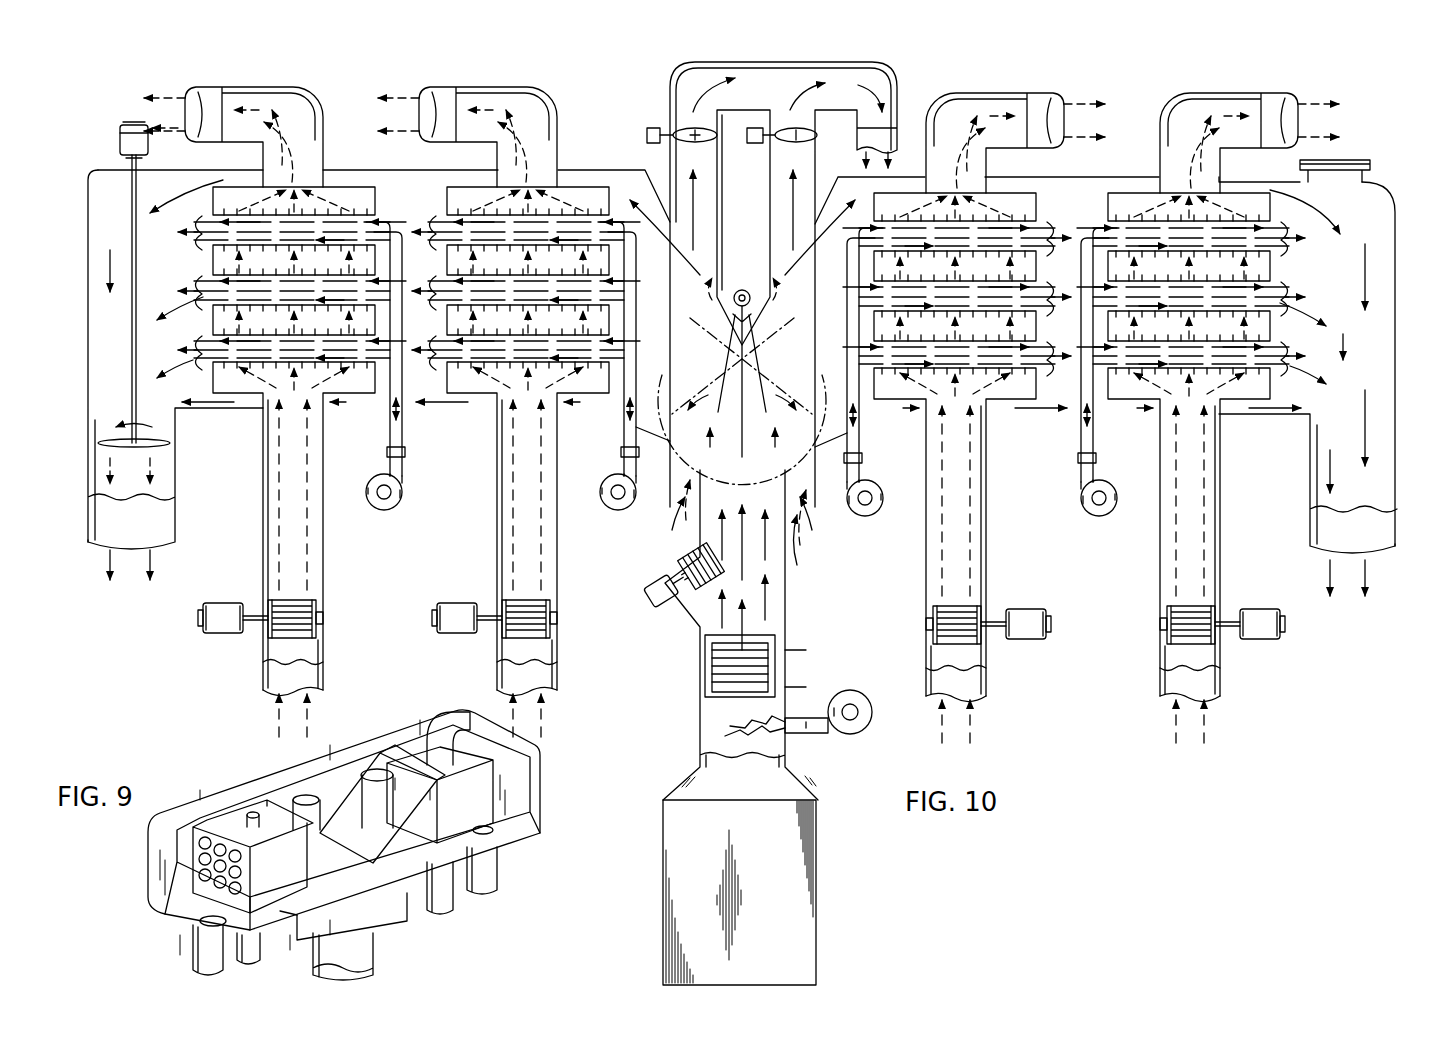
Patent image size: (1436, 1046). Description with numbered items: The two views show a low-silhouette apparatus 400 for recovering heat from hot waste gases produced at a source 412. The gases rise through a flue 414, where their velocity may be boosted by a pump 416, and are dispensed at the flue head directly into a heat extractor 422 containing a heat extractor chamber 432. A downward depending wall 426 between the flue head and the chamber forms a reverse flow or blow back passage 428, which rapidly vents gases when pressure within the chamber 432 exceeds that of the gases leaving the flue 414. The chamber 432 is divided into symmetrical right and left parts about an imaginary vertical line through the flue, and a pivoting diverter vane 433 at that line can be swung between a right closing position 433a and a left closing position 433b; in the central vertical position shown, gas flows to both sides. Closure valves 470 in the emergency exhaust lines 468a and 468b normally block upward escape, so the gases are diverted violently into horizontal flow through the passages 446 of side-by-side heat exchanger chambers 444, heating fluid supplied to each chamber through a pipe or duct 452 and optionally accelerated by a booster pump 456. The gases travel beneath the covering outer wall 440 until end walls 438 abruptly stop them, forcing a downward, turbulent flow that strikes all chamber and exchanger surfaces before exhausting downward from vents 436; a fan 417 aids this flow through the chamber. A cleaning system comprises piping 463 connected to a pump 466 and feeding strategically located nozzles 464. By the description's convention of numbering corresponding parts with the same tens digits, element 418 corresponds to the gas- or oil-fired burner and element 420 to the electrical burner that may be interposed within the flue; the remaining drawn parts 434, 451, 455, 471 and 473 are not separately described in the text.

In FIG. 10, the apparatus 400 is at (1357, 120).
In FIG. 9, the apparatus 400 is at (157, 772).
In FIG. 10, the source 412 is at (816, 885).
In FIG. 10, the flue 414 is at (787, 624).
In FIG. 9, the flue 414 is at (340, 943).
In FIG. 10, the pump 416 is at (672, 597).
In FIG. 10, the fan 417 is at (172, 446).
In FIG. 10, the blower 418 is at (832, 735).
In FIG. 10, the heat exchanger 420 is at (705, 694).
In FIG. 10, the heat extractor 422 is at (645, 530).
In FIG. 9, the heat extractor 422 is at (392, 937).
In FIG. 10, the downward depending wall 426 is at (815, 507).
In FIG. 10, the reverse flow or blow back passage 428 is at (792, 505).
In FIG. 10, the heat extractor chamber 432 is at (850, 434).
In FIG. 10, the diverter vane 433 is at (750, 438).
In FIG. 10, the right closing position 433a is at (800, 393).
In FIG. 10, the left closing position 433b is at (697, 393).
In FIG. 10, the distribution passage 434 is at (640, 247).
In FIG. 10, the vent 436 is at (170, 550).
In FIG. 9, the vent 436 is at (197, 963).
In FIG. 10, the end wall 438 is at (92, 207).
In FIG. 10, the covering wall 440 is at (338, 170).
In FIG. 9, the covering wall 440 is at (260, 780).
In FIG. 10, the heat exchanger chamber 444 is at (376, 200).
In FIG. 10, the passage 446 is at (197, 338).
In FIG. 10, the inlet pipe 451 is at (201, 87).
In FIG. 10, the pipe or duct 452 is at (323, 690).
In FIG. 9, the pipe or duct 452 is at (247, 957).
In FIG. 9, the elbow pipe 455 is at (540, 800).
In FIG. 10, the booster pump 456 is at (310, 600).
In FIG. 10, the piping 463 is at (404, 452).
In FIG. 10, the nozzle 464 is at (197, 264).
In FIG. 10, the pump 466 is at (408, 488).
In FIG. 10, the emergency exhaust line 468a is at (647, 135).
In FIG. 10, the emergency exhaust line 468b is at (775, 168).
In FIG. 10, the closure valve 470 is at (673, 112).
In FIG. 10, the flow path 471 is at (676, 510).
In FIG. 10, the flange cover 473 is at (1358, 159).